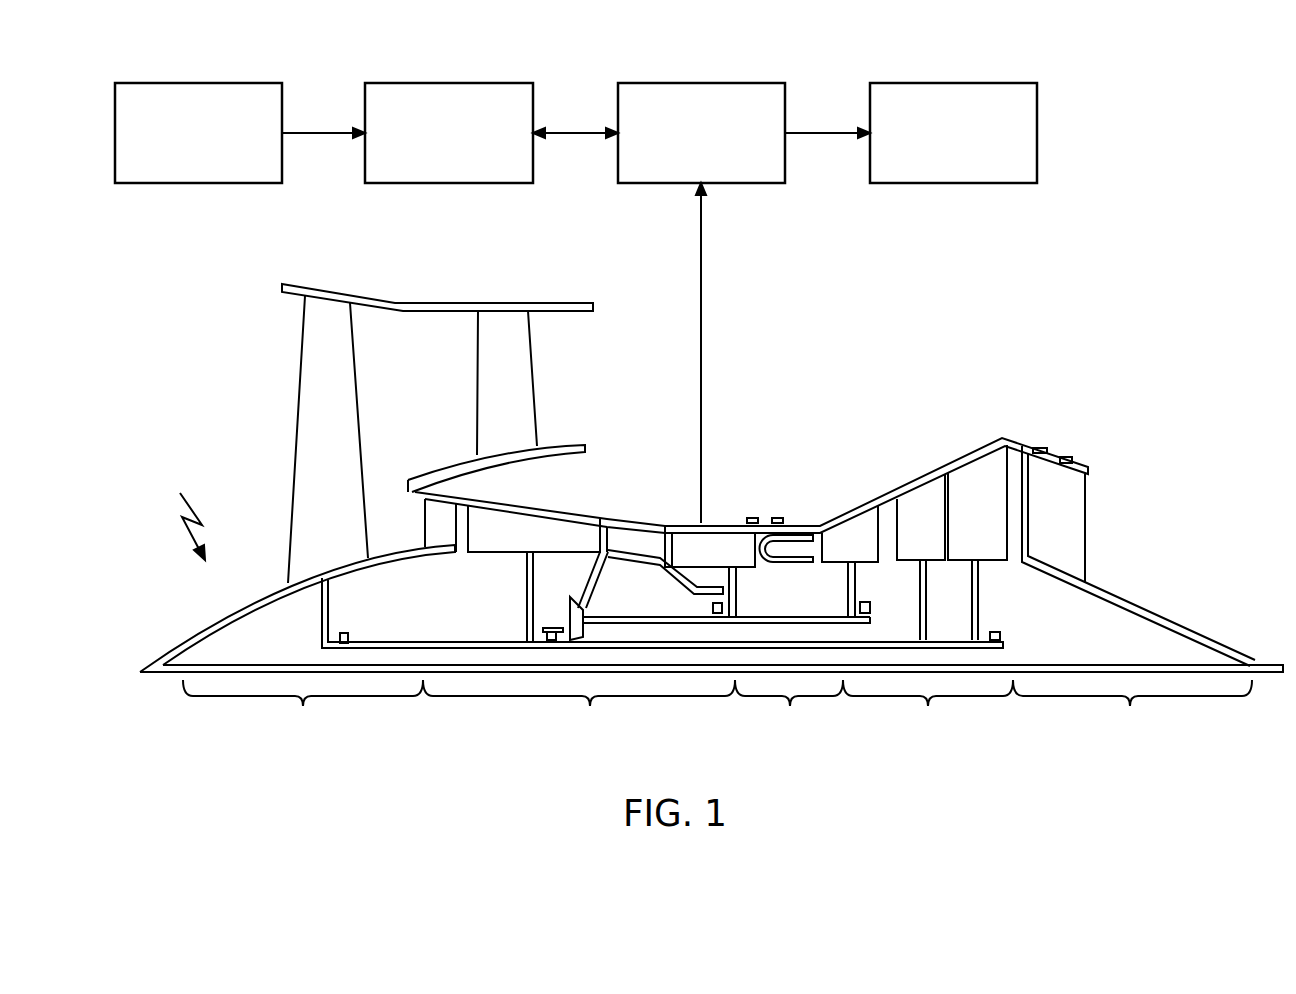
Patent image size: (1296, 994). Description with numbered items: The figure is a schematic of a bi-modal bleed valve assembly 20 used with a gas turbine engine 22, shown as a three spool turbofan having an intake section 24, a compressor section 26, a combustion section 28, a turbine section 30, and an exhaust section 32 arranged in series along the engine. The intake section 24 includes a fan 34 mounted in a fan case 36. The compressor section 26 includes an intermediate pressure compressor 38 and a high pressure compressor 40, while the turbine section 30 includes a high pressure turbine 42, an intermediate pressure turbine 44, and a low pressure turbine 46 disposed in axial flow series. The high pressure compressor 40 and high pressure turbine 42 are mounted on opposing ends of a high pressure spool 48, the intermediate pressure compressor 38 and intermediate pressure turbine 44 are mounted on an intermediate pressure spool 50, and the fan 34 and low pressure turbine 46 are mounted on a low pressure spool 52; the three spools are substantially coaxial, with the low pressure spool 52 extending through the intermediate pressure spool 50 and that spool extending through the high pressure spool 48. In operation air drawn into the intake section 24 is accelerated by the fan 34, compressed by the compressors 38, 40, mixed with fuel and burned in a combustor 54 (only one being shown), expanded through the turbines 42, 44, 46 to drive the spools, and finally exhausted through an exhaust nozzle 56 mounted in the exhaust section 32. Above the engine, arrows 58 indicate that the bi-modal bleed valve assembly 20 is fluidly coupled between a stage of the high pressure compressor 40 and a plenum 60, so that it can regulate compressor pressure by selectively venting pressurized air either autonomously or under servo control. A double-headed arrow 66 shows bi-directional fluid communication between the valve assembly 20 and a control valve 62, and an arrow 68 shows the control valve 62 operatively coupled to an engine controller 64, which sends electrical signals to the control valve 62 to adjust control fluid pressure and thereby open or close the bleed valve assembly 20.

The bi-modal bleed valve assembly 20 is at (713, 83).
The gas turbine engine 22 is at (183, 511).
The intake section 24 is at (303, 711).
The compressor section 26 is at (579, 711).
The combustion section 28 is at (789, 711).
The turbine section 30 is at (928, 711).
The exhaust section 32 is at (1132, 711).
The fan 34 is at (303, 373).
The fan case 36 is at (424, 303).
The intermediate pressure compressor 38 is at (548, 522).
The high pressure compressor 40 is at (720, 540).
The high pressure turbine 42 is at (860, 527).
The intermediate pressure turbine 44 is at (918, 505).
The low pressure turbine 46 is at (978, 477).
The high pressure spool 48 is at (772, 617).
The intermediate pressure spool 50 is at (830, 640).
The low pressure spool 52 is at (462, 640).
The combustor 54 is at (790, 537).
The exhaust nozzle 56 is at (1079, 523).
The arrows 58 is at (703, 340).
The plenum 60 is at (964, 83).
The control valve 62 is at (461, 83).
The engine controller 64 is at (209, 83).
The double-headed arrow 66 is at (569, 133).
The arrow 68 is at (319, 133).